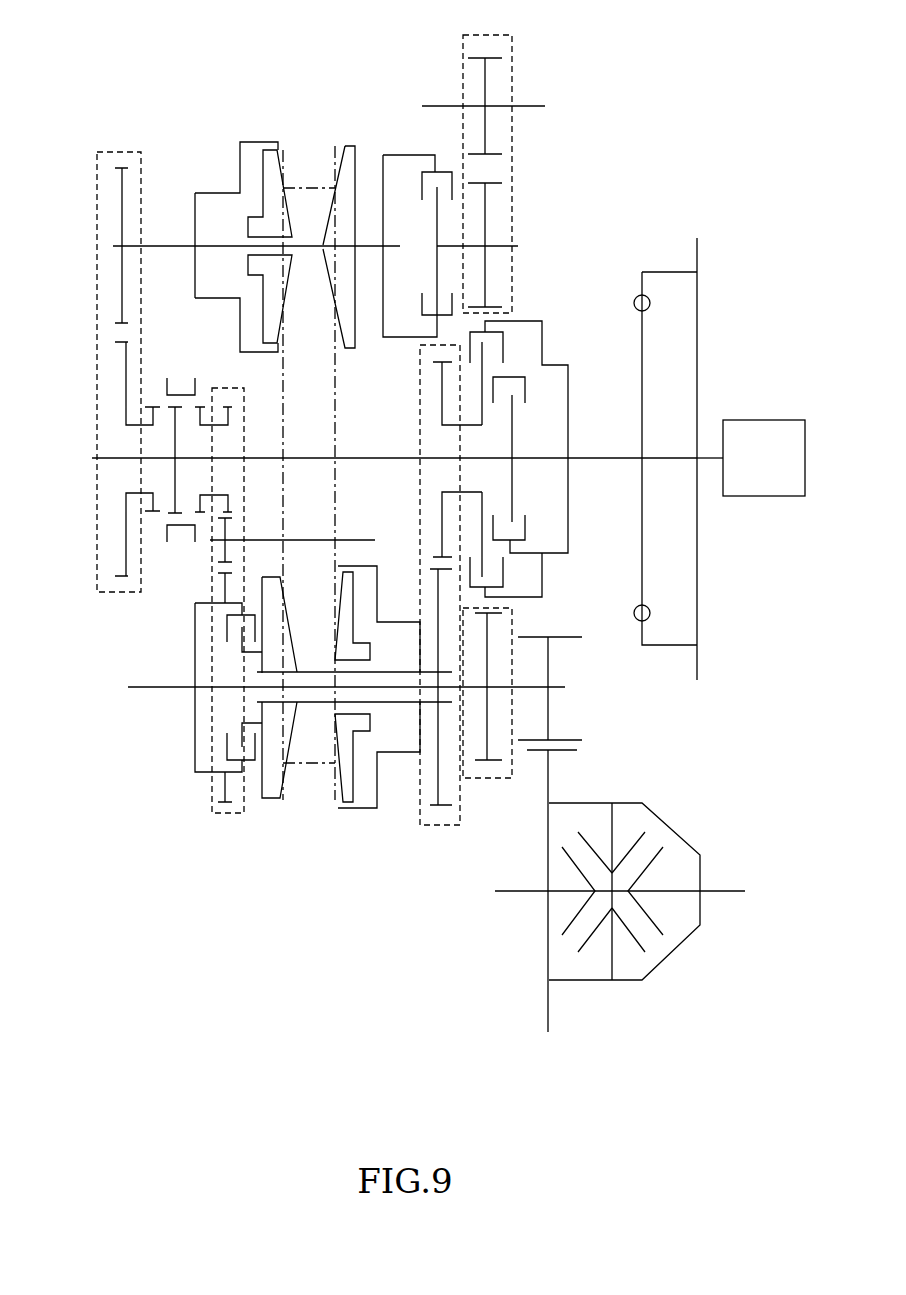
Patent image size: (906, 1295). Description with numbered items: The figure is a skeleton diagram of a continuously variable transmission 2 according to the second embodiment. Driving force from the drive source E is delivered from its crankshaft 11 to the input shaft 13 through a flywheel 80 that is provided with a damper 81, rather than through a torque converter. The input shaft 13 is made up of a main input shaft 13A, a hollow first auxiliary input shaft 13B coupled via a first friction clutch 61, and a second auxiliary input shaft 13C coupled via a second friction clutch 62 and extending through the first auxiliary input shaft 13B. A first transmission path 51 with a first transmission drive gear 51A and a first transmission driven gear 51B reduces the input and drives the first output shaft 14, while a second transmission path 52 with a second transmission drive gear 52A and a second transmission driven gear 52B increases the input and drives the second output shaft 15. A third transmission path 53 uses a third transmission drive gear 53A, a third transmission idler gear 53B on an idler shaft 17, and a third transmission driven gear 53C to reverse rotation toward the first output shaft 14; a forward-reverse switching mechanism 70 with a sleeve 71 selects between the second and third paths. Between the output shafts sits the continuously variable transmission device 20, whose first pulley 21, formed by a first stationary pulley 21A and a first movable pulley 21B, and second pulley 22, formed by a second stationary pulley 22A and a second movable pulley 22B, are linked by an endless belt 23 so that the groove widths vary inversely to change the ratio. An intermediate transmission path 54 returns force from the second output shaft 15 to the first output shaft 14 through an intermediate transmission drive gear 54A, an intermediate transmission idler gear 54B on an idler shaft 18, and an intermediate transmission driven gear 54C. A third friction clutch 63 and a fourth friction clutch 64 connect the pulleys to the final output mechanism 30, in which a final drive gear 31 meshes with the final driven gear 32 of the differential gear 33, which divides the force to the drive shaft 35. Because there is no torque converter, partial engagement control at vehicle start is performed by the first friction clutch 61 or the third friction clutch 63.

The continuously variable transmission 2 is at (667, 170).
The crankshaft 11 is at (711, 456).
The input shaft 13 is at (583, 452).
The main input shaft 13A is at (577, 464).
The first auxiliary input shaft 13B is at (457, 425).
The second auxiliary input shaft 13C is at (375, 458).
The first output shaft 14 is at (160, 685).
The second output shaft 15 is at (160, 243).
The idler shaft 17 is at (293, 546).
The idler shaft 18 is at (523, 103).
The continuously variable transmission device 20 is at (353, 80).
The first pulley 21 is at (375, 848).
The first stationary pulley 21A is at (280, 790).
The first movable pulley 21B is at (333, 793).
The second pulley 22 is at (363, 101).
The second stationary pulley 22A is at (337, 157).
The second movable pulley 22B is at (283, 157).
The endless belt 23 is at (337, 386).
The final output mechanism 30 is at (645, 742).
The final drive gear 31 is at (550, 712).
The final driven gear 32 is at (550, 777).
The differential gear 33 is at (677, 815).
The drive shaft 35 is at (737, 893).
The first transmission path 51 is at (428, 827).
The first transmission drive gear 51A is at (440, 508).
The first transmission driven gear 51B is at (436, 580).
The second transmission path 52 is at (108, 594).
The second transmission drive gear 52A is at (123, 366).
The second transmission driven gear 52B is at (121, 301).
The third transmission path 53 is at (212, 805).
The third transmission drive gear 53A is at (232, 500).
The third transmission idler gear 53B is at (232, 520).
The third transmission driven gear 53C is at (222, 585).
The intermediate transmission path 54 is at (513, 167).
The intermediate transmission drive gear 54A is at (487, 203).
The intermediate transmission idler gear 54B is at (487, 125).
The intermediate transmission driven gear 54C is at (490, 628).
The first friction clutch 61 is at (505, 345).
The second friction clutch 62 is at (528, 388).
The third friction clutch 63 is at (443, 172).
The fourth friction clutch 64 is at (252, 762).
The forward-reverse switching mechanism 70 is at (172, 364).
The sleeve 71 is at (195, 383).
The flywheel 80 is at (675, 268).
The damper 81 is at (634, 302).